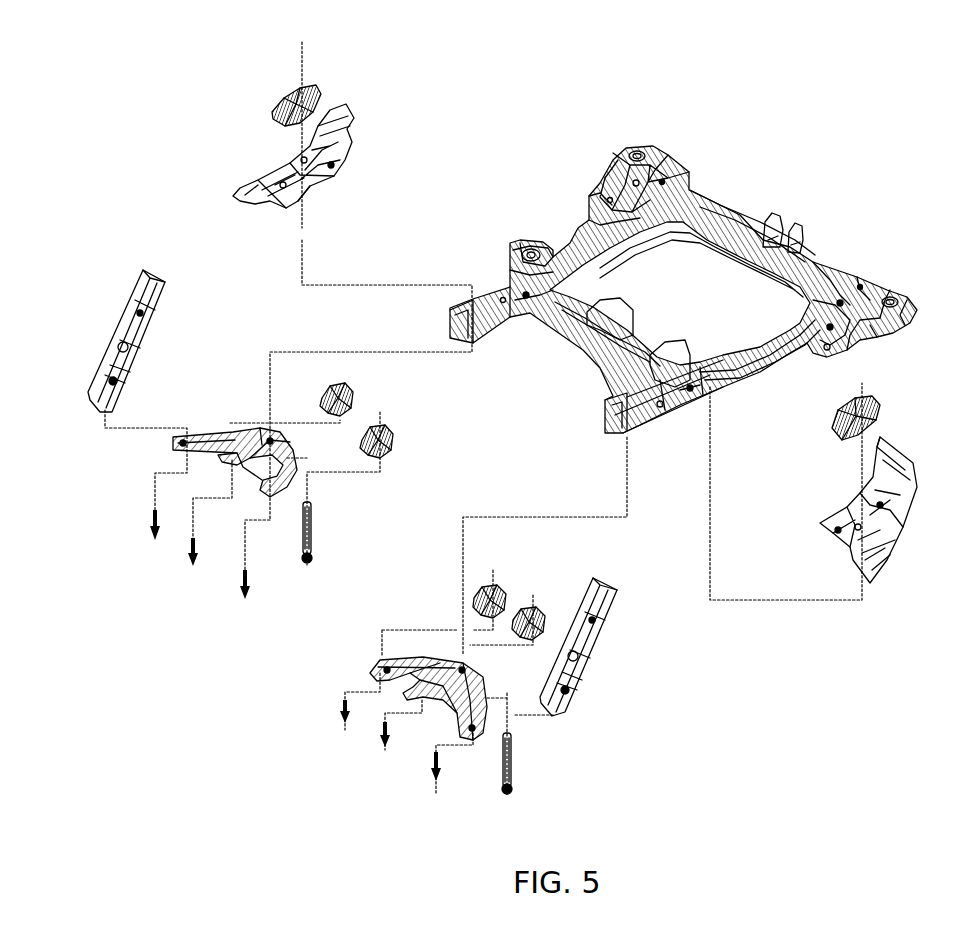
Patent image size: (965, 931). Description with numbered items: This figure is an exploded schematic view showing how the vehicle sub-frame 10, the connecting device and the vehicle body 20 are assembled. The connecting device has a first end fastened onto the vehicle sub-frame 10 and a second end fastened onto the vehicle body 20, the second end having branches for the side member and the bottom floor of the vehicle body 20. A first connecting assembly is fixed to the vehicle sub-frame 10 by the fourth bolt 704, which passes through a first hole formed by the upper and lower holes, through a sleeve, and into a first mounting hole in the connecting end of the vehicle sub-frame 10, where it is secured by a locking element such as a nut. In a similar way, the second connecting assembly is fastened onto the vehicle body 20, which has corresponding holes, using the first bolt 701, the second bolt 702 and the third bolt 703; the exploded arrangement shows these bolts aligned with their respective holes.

The vehicle sub-frame 10 is at (575, 238).
The vehicle body 20 is at (582, 677).
The first bolt 701 is at (153, 530).
The second bolt 702 is at (193, 556).
The third bolt 703 is at (244, 590).
The fourth bolt 704 is at (306, 560).